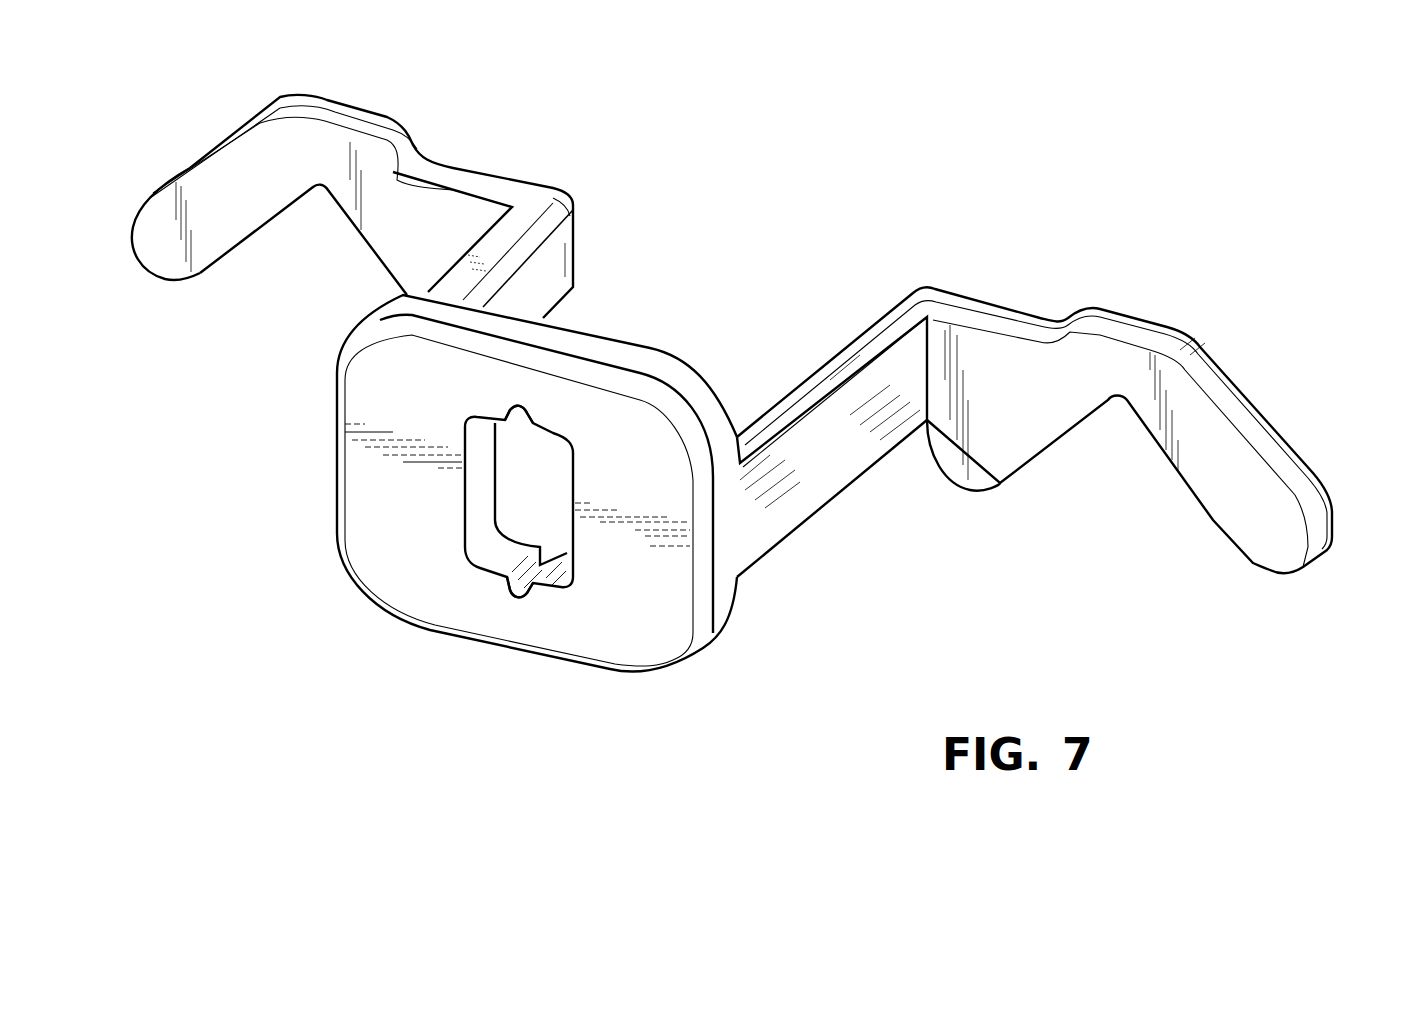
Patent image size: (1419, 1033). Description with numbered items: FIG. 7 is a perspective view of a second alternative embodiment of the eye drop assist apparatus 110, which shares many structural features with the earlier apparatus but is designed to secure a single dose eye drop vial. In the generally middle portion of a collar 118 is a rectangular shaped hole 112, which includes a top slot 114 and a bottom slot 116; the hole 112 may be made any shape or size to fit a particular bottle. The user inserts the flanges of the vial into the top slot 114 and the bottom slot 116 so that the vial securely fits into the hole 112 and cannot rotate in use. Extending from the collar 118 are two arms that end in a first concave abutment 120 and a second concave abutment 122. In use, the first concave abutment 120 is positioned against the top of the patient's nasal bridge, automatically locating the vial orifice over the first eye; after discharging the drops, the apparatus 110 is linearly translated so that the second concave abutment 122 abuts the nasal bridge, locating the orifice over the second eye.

The eye drop assist apparatus 110 is at (350, 632).
The hole 112 is at (486, 487).
The top slot 114 is at (530, 420).
The bottom slot 116 is at (532, 587).
The collar 118 is at (703, 648).
The first concave abutment 120 is at (1248, 383).
The second concave abutment 122 is at (397, 117).